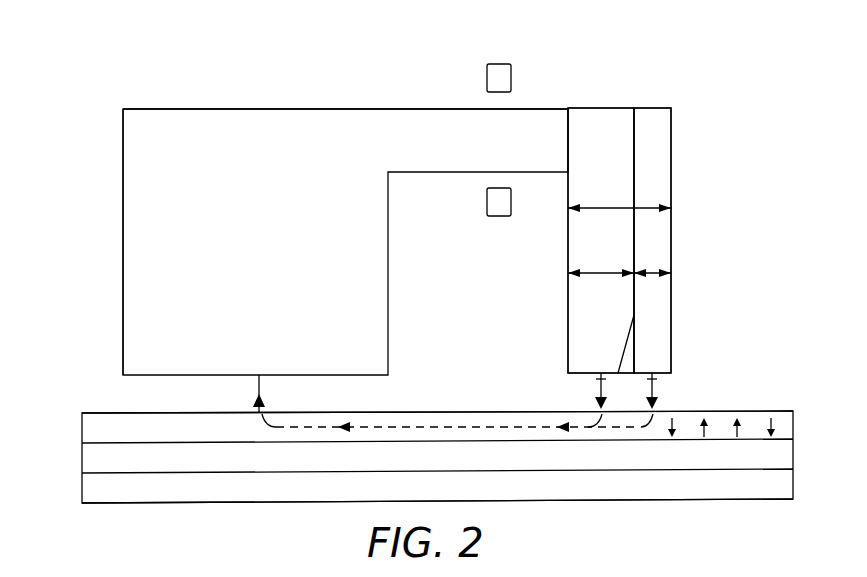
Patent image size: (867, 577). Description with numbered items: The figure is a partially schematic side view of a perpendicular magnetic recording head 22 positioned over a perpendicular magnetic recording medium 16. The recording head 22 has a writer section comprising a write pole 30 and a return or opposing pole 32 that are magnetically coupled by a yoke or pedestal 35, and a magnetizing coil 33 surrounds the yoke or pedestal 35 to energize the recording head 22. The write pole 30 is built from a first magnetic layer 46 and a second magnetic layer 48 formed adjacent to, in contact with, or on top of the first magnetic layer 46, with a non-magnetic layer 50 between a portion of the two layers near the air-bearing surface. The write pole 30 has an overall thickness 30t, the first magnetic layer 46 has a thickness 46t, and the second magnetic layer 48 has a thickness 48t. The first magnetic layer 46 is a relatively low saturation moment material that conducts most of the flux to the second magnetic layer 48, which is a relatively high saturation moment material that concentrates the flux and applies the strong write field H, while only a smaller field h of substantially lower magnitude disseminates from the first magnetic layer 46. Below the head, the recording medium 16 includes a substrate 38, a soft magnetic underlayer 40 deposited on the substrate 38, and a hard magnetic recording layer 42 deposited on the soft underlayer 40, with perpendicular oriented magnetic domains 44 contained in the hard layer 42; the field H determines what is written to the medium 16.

The perpendicular magnetic recording head 22 is at (114, 82).
The return or opposing pole 32 is at (137, 272).
The yoke or pedestal 35 is at (457, 125).
The magnetizing coil 33 is at (511, 79).
The write pole 30 is at (612, 100).
The first magnetic layer 46 is at (585, 115).
The second magnetic layer 48 is at (648, 116).
The non-magnetic layer 50 is at (627, 359).
The thickness of the write pole 30t is at (643, 207).
The thickness of the first magnetic layer 46t is at (592, 272).
The thickness of the second magnetic layer 48t is at (652, 272).
The magnetic flux or field from the first magnetic layer h is at (597, 379).
The magnetic write flux or field H is at (657, 379).
The perpendicular magnetic recording medium 16 is at (86, 407).
The soft magnetic underlayer 40 is at (98, 457).
The substrate 38 is at (761, 486).
The perpendicular oriented magnetic domains 44 is at (774, 421).
The hard magnetic recording layer 42 is at (378, 420).